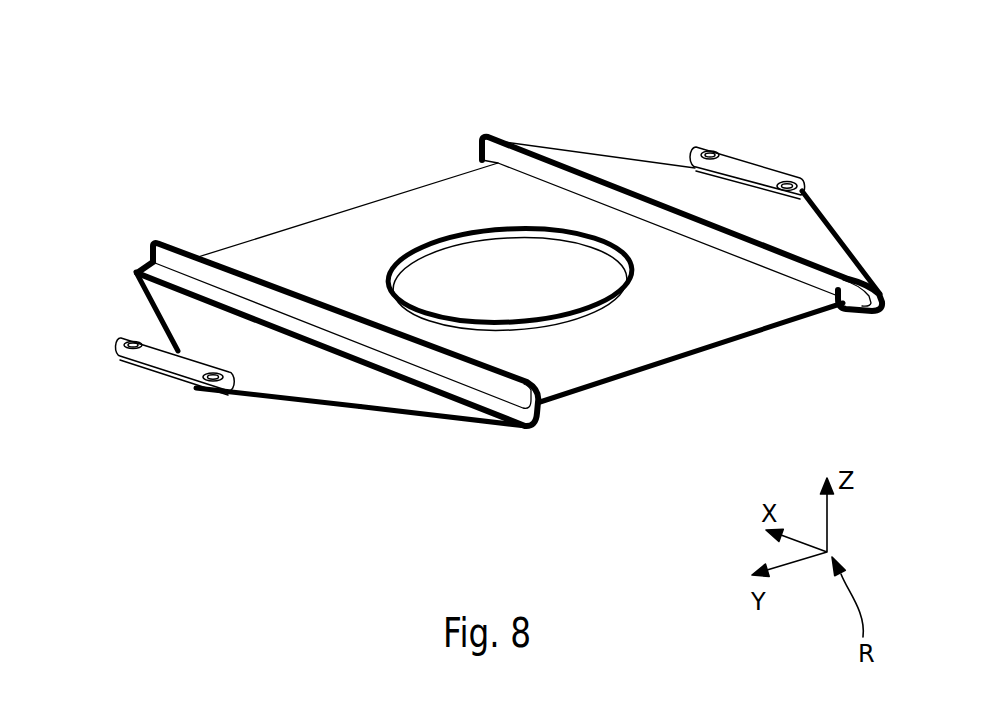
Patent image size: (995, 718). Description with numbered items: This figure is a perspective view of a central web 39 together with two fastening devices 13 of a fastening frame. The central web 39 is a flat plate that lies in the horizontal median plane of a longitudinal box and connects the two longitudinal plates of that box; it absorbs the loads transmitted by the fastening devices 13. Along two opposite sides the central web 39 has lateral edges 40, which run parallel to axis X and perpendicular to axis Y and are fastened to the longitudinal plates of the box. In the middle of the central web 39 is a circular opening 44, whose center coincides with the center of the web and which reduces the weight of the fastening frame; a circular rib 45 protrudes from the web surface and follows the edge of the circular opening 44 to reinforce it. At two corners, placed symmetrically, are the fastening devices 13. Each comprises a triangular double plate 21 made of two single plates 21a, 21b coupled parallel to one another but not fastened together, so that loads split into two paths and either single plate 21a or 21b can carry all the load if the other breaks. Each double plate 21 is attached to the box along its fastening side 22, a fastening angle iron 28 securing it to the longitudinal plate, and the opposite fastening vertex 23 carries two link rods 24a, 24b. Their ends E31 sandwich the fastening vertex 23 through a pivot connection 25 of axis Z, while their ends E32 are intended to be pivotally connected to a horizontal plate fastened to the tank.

The fastening device 13 is at (482, 326).
The double plate 21 is at (459, 268).
The first single plate 21a is at (386, 418).
The second single plate 21b is at (325, 412).
The fastening side 22 is at (561, 160).
The fastening vertex 23 is at (490, 267).
The first link rod 24a is at (757, 166).
The second link rod 24b is at (694, 164).
The pivot connection 25 is at (482, 267).
The fastening angle iron 28 is at (882, 302).
The central web 39 is at (683, 356).
The lateral edges 40 is at (525, 268).
The circular opening 44 is at (510, 274).
The circular rib 45 is at (553, 323).
The end of link rods connected to fastening vertex E31 is at (790, 181).
The end of link rods connected to tank plate E32 is at (711, 152).